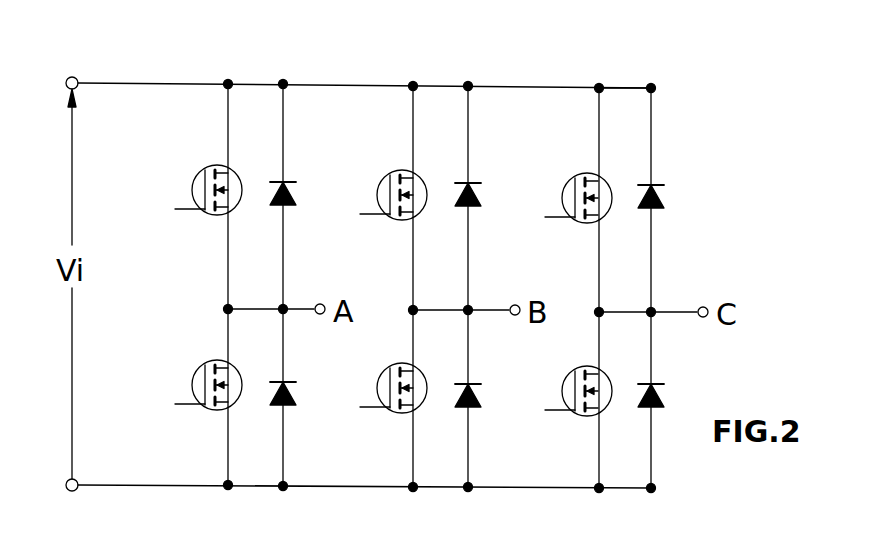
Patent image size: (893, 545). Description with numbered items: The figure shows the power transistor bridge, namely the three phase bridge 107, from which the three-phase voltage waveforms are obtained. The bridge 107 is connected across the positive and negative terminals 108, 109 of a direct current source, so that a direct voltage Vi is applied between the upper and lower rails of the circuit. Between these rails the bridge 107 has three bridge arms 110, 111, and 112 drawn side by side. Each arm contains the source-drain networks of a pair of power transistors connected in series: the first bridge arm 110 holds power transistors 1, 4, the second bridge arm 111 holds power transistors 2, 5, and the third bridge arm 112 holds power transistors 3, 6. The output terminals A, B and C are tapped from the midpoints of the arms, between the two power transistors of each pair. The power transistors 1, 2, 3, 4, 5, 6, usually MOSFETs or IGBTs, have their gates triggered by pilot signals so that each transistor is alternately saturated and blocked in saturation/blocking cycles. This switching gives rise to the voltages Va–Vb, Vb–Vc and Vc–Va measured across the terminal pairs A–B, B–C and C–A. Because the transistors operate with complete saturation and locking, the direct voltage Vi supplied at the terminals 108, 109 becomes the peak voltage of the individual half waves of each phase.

The power transistor 1 is at (198, 174).
The power transistor 2 is at (386, 177).
The power transistor 3 is at (572, 180).
The power transistor 4 is at (212, 411).
The power transistor 5 is at (393, 414).
The power transistor 6 is at (582, 420).
The three phase bridge 107 is at (662, 70).
The positive terminal 108 is at (75, 76).
The negative terminal 109 is at (74, 492).
The bridge arm 110 is at (227, 267).
The bridge arm 111 is at (412, 270).
The bridge arm 112 is at (599, 257).